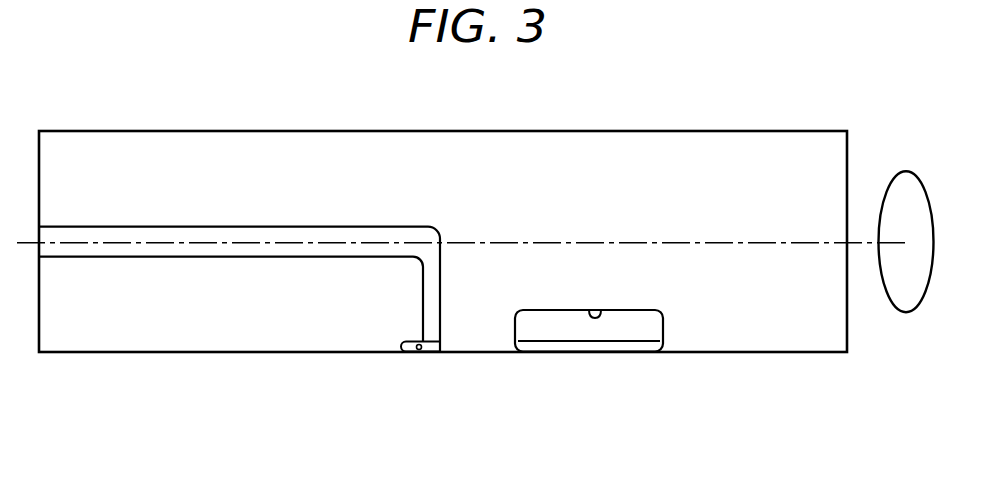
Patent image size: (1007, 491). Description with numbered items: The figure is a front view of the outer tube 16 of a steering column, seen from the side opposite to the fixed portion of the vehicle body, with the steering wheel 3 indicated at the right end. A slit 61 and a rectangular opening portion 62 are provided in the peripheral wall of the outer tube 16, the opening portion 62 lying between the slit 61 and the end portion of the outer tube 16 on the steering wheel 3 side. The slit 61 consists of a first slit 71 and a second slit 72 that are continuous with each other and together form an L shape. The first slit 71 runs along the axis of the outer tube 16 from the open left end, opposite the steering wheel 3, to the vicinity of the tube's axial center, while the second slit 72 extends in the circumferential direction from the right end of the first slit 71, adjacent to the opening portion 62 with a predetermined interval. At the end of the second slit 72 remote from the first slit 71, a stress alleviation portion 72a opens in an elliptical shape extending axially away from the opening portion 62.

The steering wheel 3 is at (913, 171).
The outer tube 16 is at (540, 131).
The slit 61 is at (239, 335).
The opening portion 62 is at (595, 318).
The first slit 71 is at (302, 256).
The second slit 72 is at (423, 292).
The stress alleviation portion 72a is at (427, 352).